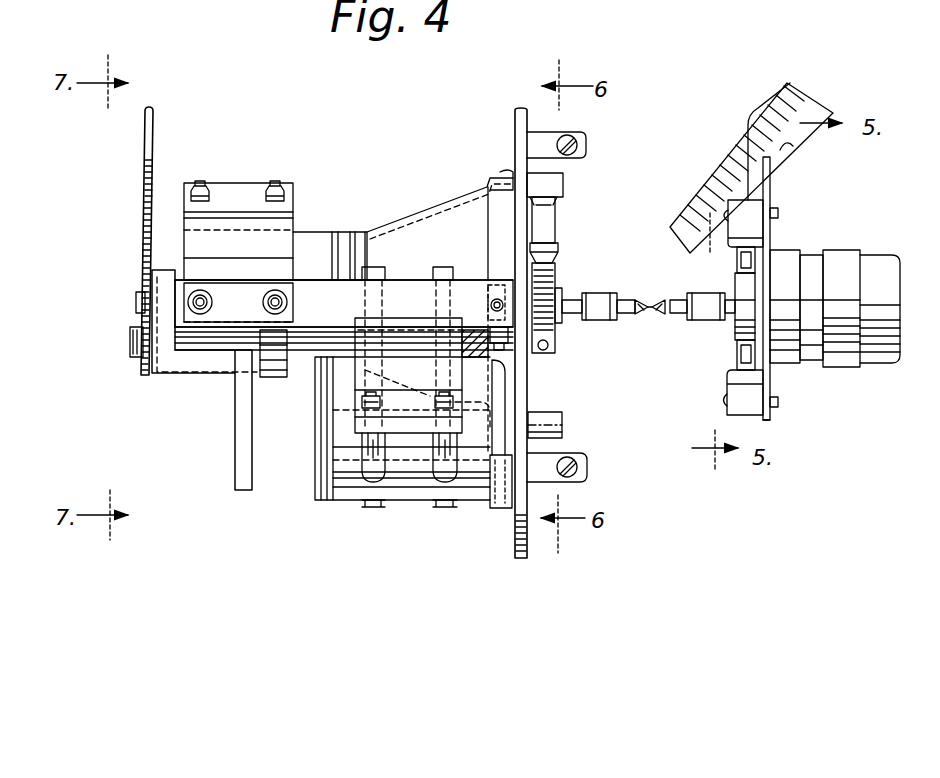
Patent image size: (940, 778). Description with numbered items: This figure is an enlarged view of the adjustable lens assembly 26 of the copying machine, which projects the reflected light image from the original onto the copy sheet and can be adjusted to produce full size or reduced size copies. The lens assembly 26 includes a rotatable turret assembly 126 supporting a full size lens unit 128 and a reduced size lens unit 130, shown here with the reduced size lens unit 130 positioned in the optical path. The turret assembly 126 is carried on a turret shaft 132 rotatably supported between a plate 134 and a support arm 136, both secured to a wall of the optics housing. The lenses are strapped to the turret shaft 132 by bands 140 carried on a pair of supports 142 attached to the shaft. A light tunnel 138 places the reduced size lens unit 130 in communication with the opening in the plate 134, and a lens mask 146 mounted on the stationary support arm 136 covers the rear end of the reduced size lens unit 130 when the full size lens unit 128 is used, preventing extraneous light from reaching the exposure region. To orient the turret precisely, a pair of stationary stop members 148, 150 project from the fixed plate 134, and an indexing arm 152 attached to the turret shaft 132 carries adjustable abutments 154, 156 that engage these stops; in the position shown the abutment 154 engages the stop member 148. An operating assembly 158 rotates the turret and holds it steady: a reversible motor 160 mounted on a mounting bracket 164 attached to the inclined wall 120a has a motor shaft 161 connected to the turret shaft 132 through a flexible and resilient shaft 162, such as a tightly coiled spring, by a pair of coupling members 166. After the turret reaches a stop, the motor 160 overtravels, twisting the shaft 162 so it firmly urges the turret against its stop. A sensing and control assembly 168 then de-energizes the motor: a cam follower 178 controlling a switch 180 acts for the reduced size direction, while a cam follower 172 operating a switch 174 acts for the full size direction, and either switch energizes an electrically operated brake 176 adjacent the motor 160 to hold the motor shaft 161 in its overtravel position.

The adjustable lens assembly 26 is at (338, 134).
The inclined wall 120a is at (748, 172).
The rotatable turret assembly 126 is at (432, 203).
The full size lens unit 128 is at (410, 490).
The reduced size lens unit 130 is at (308, 238).
The turret shaft 132 is at (422, 288).
The plate 134 is at (514, 113).
The support arm 136 is at (181, 374).
The light tunnel 138 is at (512, 172).
The bands 140 is at (207, 346).
The supports 142 is at (233, 195).
The lens mask 146 is at (154, 119).
The stop member 148 is at (566, 182).
The stop member 150 is at (563, 427).
The indexing arm 152 is at (553, 279).
The adjustable abutment 154 is at (558, 198).
The adjustable abutment 156 is at (560, 262).
The operating assembly 158 is at (666, 344).
The reversible motor 160 is at (798, 256).
The motor shaft 161 is at (757, 312).
The flexible and resilient shaft 162 is at (660, 298).
The mounting bracket 164 is at (769, 188).
The coupling members 166 is at (597, 320).
The sensing and control assembly 168 is at (806, 405).
The cam follower 172 is at (740, 355).
The switch 174 is at (740, 404).
The electrically operated brake 176 is at (878, 262).
The cam follower 178 is at (740, 266).
The switch 180 is at (756, 232).